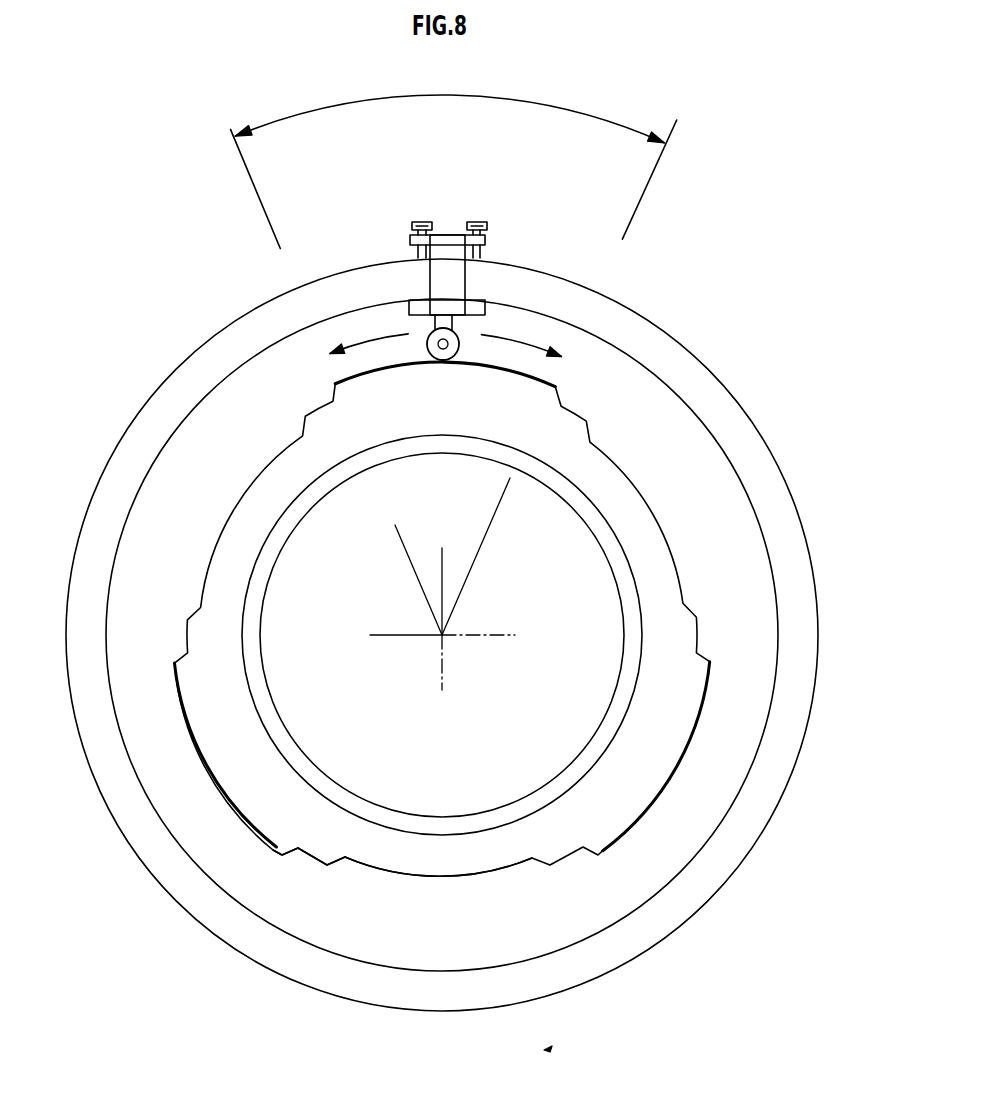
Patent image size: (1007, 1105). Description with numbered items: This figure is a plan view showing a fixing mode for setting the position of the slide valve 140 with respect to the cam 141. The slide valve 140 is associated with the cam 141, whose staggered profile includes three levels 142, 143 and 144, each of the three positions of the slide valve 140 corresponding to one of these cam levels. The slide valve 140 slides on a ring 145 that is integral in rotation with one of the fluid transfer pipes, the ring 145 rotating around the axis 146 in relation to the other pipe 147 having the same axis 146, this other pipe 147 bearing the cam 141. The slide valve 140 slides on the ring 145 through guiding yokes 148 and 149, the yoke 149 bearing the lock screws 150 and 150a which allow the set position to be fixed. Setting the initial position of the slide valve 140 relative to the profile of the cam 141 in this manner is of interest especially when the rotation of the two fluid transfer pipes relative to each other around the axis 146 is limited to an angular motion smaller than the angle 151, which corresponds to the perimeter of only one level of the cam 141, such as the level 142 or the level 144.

The slide valve 140 is at (452, 273).
The cam 141 is at (266, 780).
The cam level 142 is at (273, 850).
The cam level 143 is at (313, 858).
The cam level 144 is at (410, 877).
The ring 145 is at (475, 987).
The axis 146 is at (441, 637).
The pipe 147 is at (343, 805).
The guiding yoke 148 is at (420, 303).
The guiding yoke 149 is at (480, 238).
The lock screw 150 is at (420, 220).
The lock screw 150a is at (480, 220).
The angle 151 is at (454, 154).